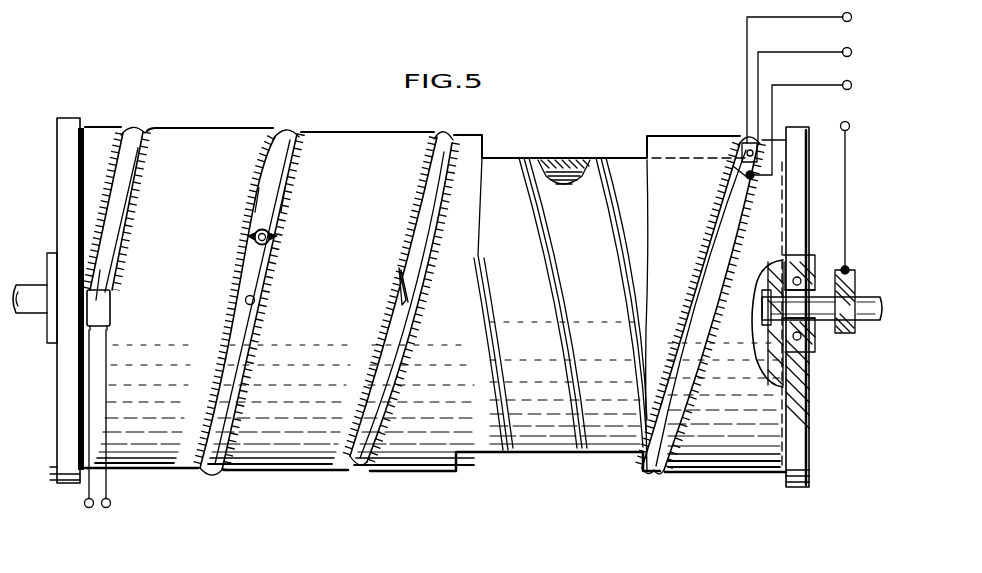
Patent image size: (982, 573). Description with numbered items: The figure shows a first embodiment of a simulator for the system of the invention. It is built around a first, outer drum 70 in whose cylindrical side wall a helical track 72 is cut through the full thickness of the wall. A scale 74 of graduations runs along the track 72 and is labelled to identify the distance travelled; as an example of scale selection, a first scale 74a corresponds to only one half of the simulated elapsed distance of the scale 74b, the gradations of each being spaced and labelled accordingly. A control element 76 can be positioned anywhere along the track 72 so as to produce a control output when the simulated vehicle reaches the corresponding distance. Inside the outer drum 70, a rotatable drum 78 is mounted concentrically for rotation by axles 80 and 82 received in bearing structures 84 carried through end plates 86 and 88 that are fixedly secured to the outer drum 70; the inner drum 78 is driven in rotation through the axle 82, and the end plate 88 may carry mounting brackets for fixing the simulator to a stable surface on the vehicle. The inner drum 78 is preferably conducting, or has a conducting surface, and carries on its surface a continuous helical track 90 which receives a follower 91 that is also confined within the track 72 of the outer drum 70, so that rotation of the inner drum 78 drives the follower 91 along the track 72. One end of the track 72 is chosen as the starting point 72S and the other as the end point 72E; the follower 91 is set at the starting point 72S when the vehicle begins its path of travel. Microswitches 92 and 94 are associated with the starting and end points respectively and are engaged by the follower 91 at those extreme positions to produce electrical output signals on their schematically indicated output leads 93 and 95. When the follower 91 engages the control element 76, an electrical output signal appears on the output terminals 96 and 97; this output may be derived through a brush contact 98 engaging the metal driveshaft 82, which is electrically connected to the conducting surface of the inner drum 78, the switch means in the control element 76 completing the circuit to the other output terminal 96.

The outer drum 70 is at (236, 127).
The helical track 72 is at (292, 135).
The end of the track 72E is at (120, 286).
The starting point of the track 72S is at (735, 144).
The scale 74 is at (150, 178).
The first scale 74a is at (258, 196).
The scale 74b is at (286, 197).
The control element 76 is at (277, 240).
The rotatable drum 78 is at (593, 268).
The axle 80 is at (30, 316).
The axle 82 is at (866, 322).
The bearing structures 84 is at (815, 345).
The end plate 86 is at (63, 212).
The end plate 88 is at (808, 442).
The continuous helical track 90 is at (541, 247).
The follower 91 is at (244, 299).
The microswitch 92 is at (731, 166).
The output leads 93 is at (852, 50).
The microswitch 94 is at (111, 308).
The output leads 95 is at (91, 508).
The output terminal 96 is at (852, 85).
The output terminal 97 is at (850, 126).
The brush contact 98 is at (858, 294).